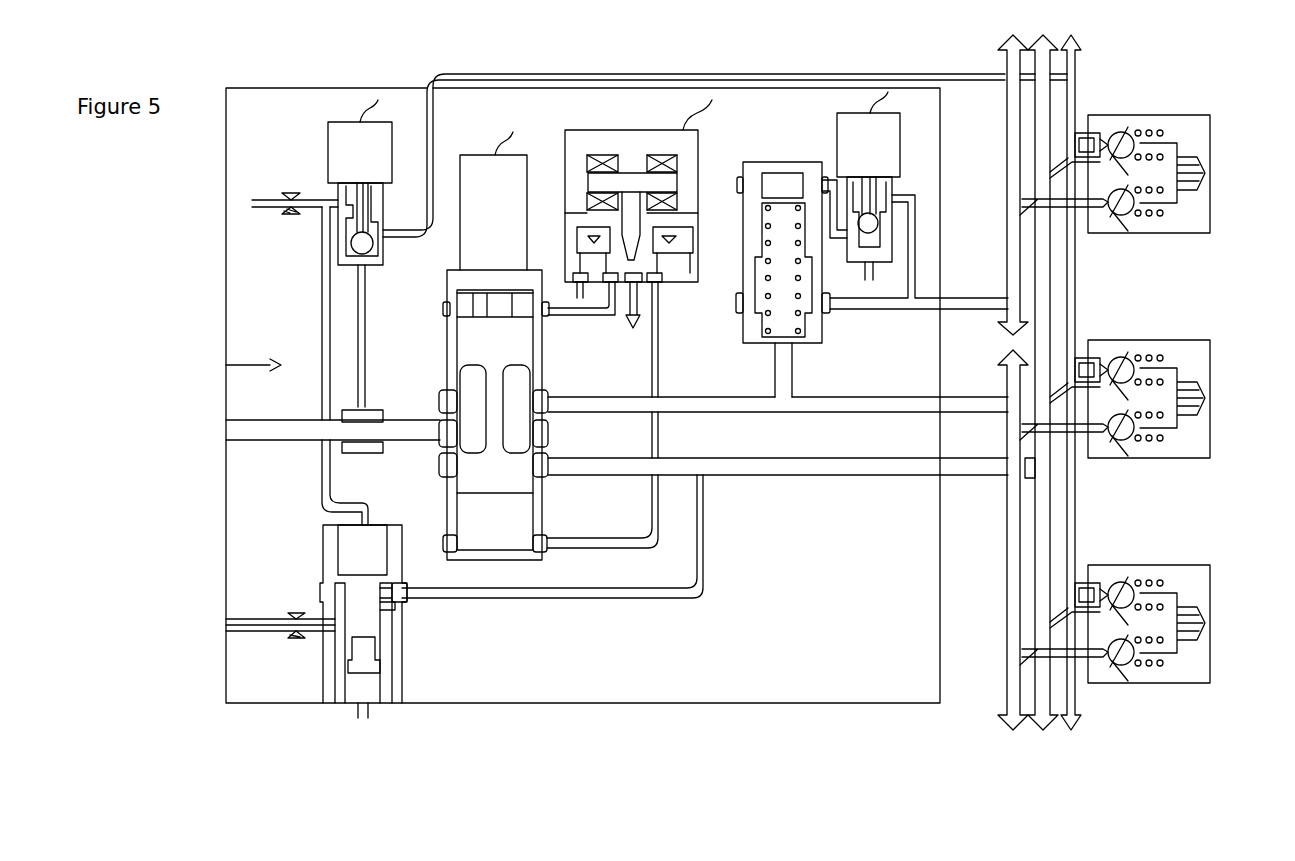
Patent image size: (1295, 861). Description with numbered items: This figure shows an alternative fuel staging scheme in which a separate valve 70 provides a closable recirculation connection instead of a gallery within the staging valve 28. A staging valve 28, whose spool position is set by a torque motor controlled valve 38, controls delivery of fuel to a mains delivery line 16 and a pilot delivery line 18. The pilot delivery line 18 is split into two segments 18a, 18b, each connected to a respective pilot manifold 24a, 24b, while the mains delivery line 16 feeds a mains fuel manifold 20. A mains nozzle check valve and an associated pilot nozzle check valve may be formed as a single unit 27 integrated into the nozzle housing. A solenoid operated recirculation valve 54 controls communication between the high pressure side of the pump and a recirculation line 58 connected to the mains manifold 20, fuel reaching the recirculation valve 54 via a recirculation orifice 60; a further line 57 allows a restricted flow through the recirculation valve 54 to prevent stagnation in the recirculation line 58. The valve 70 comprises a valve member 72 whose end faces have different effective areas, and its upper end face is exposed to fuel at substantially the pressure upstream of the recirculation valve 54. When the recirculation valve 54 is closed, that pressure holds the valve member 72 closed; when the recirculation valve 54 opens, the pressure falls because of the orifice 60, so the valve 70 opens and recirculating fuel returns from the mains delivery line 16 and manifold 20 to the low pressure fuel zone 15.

The low pressure fuel zone 15 is at (263, 633).
The mains delivery line 16 is at (835, 477).
The pilot delivery line 18 is at (722, 385).
The pilot delivery line segment 18a is at (875, 413).
The pilot delivery line segment 18b is at (887, 310).
The mains fuel manifold 20 is at (1052, 300).
The pilot manifold 24a is at (1005, 535).
The pilot manifold 24b is at (1005, 264).
The single unit 27 is at (1218, 118).
The staging valve 28 is at (560, 358).
The torque motor controlled valve 38 is at (722, 142).
The recirculation valve 54 is at (405, 262).
The further line 57 is at (366, 336).
The recirculation line 58 is at (970, 74).
The recirculation orifice 60 is at (290, 194).
The valve 70 is at (303, 562).
The valve member 72 is at (398, 606).